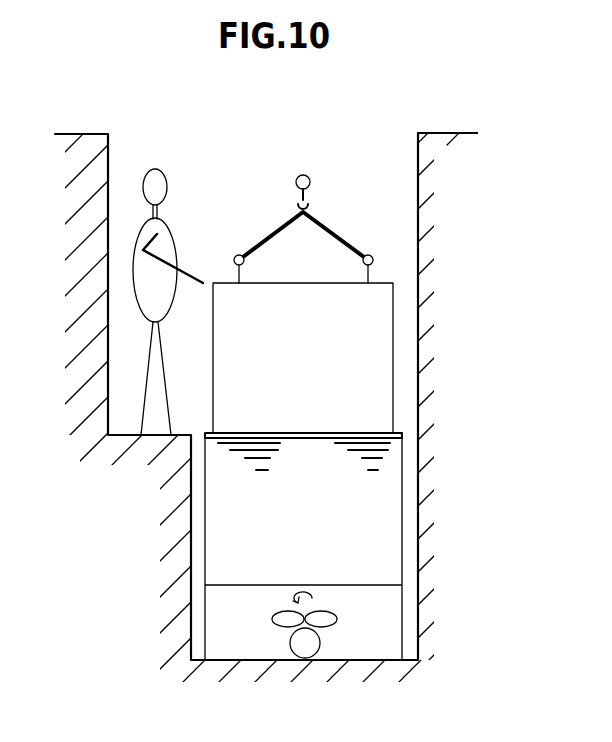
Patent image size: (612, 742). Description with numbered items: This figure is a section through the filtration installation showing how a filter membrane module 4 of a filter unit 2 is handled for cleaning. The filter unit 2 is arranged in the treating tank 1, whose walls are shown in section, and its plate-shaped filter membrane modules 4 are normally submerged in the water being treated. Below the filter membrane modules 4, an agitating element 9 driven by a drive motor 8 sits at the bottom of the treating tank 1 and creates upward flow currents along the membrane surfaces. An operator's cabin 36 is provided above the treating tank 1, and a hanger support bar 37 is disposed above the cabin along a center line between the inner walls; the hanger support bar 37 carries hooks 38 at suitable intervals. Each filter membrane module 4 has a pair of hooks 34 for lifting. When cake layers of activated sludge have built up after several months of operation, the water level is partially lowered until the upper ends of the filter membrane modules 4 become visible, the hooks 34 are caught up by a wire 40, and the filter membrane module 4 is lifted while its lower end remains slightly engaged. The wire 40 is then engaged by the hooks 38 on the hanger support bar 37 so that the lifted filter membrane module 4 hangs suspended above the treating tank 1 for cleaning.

The treating tank 1 is at (407, 490).
The filter unit 2 is at (408, 452).
The filter membrane module 4 is at (370, 345).
The drive motor 8 is at (325, 646).
The agitating element 9 is at (275, 622).
The hooks 34 is at (236, 254).
The operator's cabin 36 is at (395, 162).
The hanger support bar 37 is at (303, 176).
The hooks 38 is at (295, 203).
The wire 40 is at (343, 238).